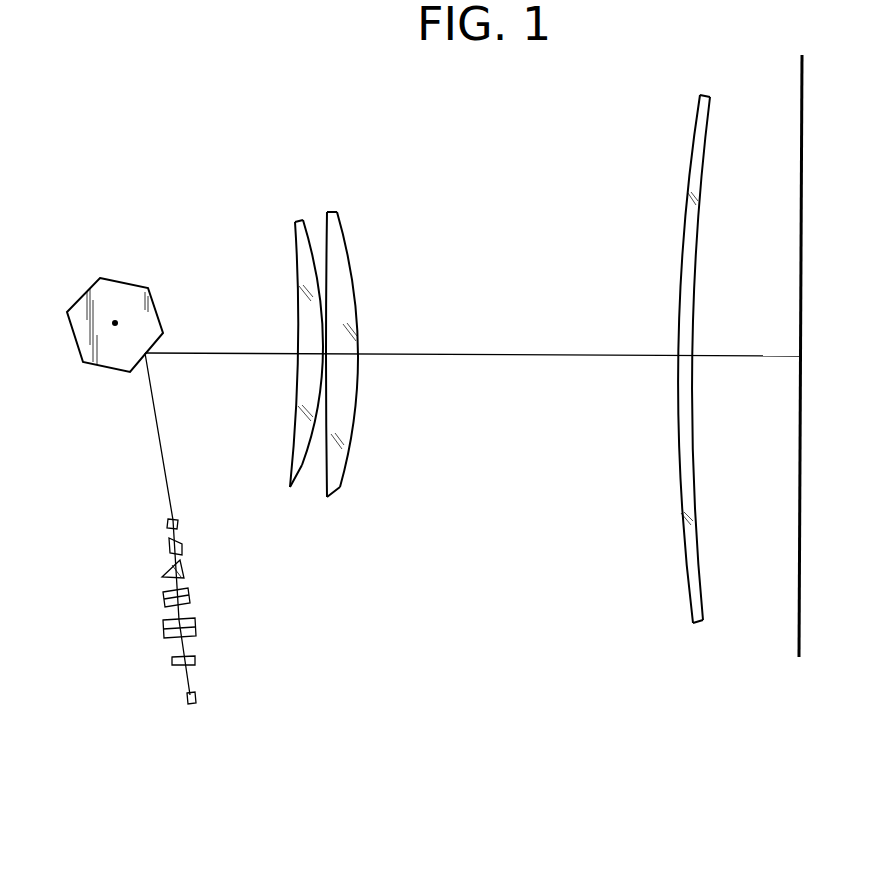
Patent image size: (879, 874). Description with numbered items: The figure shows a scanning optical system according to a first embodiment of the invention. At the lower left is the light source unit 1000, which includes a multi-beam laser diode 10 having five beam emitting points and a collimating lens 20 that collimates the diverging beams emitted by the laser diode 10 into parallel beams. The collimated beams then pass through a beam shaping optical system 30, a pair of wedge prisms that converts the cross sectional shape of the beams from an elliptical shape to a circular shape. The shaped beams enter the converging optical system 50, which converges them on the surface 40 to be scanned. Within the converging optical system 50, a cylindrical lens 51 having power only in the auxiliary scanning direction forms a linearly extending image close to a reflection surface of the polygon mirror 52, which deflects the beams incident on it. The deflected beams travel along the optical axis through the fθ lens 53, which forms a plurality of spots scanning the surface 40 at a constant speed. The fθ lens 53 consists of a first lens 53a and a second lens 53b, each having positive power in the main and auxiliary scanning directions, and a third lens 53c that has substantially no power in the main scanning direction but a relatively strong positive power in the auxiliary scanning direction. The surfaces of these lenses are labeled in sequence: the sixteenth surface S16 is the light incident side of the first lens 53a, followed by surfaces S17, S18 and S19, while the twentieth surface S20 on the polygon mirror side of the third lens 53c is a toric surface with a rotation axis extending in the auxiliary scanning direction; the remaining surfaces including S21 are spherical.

The light source unit 1000 is at (156, 590).
The multi-beam laser diode 10 is at (197, 697).
The collimating lens 20 is at (195, 585).
The beam shaping optical system 30 is at (188, 535).
The converging optical system 50 is at (202, 221).
The cylindrical lens 51 is at (181, 522).
The polygon mirror 52 is at (128, 290).
The fθ lens 53 is at (502, 374).
The first lens 53a is at (277, 355).
The second lens 53b is at (365, 358).
The third lens 53c is at (690, 366).
The sixteenth surface S16 is at (295, 257).
The seventeenth surface S17 is at (302, 222).
The eighteenth surface S18 is at (327, 238).
The nineteenth surface S19 is at (356, 267).
The twentieth surface S20 is at (682, 227).
The twenty-first surface S21 is at (705, 155).
The surface to be scanned 40 is at (799, 595).